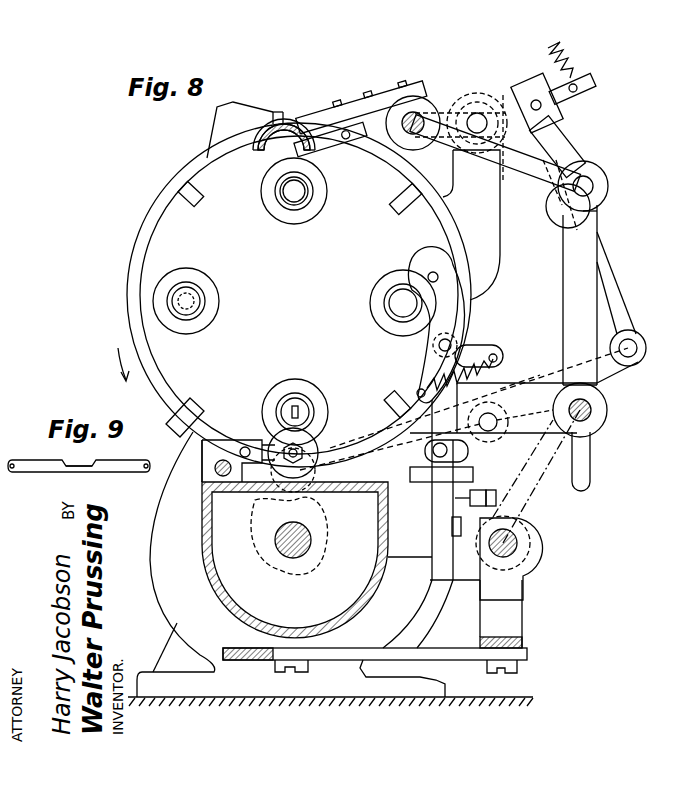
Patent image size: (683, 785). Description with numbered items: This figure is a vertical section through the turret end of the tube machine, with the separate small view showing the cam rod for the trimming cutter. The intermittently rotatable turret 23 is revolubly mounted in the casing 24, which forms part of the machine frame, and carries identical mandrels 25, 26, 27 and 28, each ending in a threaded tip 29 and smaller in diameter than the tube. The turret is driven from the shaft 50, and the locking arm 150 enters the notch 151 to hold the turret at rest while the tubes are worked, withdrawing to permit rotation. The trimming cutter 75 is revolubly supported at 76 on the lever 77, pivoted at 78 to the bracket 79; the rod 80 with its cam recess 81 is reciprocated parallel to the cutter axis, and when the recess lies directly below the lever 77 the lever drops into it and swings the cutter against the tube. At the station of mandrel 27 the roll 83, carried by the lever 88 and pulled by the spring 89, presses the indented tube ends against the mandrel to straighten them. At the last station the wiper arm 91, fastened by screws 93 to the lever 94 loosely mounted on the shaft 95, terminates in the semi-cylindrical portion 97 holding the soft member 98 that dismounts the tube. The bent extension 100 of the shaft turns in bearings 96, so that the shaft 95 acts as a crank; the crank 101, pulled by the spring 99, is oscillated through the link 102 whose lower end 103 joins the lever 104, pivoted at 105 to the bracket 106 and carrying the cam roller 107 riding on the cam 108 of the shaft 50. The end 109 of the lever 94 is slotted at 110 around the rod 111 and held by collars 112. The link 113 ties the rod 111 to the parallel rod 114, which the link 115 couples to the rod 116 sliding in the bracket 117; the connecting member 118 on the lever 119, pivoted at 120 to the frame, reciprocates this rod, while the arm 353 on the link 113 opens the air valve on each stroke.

In FIG. 8, the turret 23 is at (299, 295).
In FIG. 8, the casing 24 is at (130, 262).
In FIG. 8, the mandrel 25 is at (200, 298).
In FIG. 8, the mandrel 26 is at (304, 398).
In FIG. 8, the mandrel 27 is at (386, 311).
In FIG. 8, the mandrel 28 is at (312, 200).
In FIG. 8, the threaded tip 29 is at (204, 303).
In FIG. 8, the shaft 50 is at (276, 542).
In FIG. 8, the cutter 75 is at (318, 446).
In FIG. 8, the cutter support 76 is at (320, 455).
In FIG. 8, the lever 77 is at (220, 447).
In FIG. 8, the pivot 78 is at (248, 446).
In FIG. 8, the bracket 79 is at (282, 450).
In FIG. 8, the rod 80 is at (201, 478).
In FIG. 9, the rod 80 is at (131, 459).
In FIG. 8, the cam recess 81 is at (214, 468).
In FIG. 9, the cam recess 81 is at (86, 458).
In FIG. 8, the roll 83 is at (421, 263).
In FIG. 8, the lever 88 is at (466, 318).
In FIG. 8, the spring 89 is at (465, 367).
In FIG. 8, the wiper arm 91 is at (352, 125).
In FIG. 8, the screws 93 is at (398, 80).
In FIG. 8, the lever 94 is at (518, 170).
In FIG. 8, the shaft 95 is at (425, 111).
In FIG. 8, the bearings 96 is at (498, 273).
In FIG. 8, the semi-cylindrical portion 97 is at (276, 112).
In FIG. 8, the semi-cylindrical member 98 is at (270, 165).
In FIG. 8, the spring 99 is at (571, 50).
In FIG. 8, the shaft extension 100 is at (478, 112).
In FIG. 8, the crank 101 is at (591, 91).
In FIG. 8, the link 102 is at (616, 292).
In FIG. 8, the lower end of link 103 is at (643, 343).
In FIG. 8, the lever 104 is at (554, 376).
In FIG. 8, the pivot 105 is at (498, 420).
In FIG. 8, the bracket 106 is at (518, 386).
In FIG. 8, the cam roller 107 is at (316, 472).
In FIG. 8, the cam 108 is at (252, 520).
In FIG. 8, the end of lever 109 is at (600, 210).
In FIG. 8, the slot 110 is at (556, 212).
In FIG. 8, the rod 111 is at (596, 185).
In FIG. 8, the collars 112 is at (590, 165).
In FIG. 8, the link 113 is at (598, 244).
In FIG. 8, the rod 114 is at (592, 410).
In FIG. 8, the link 115 is at (548, 510).
In FIG. 8, the rod 116 is at (518, 549).
In FIG. 8, the bracket 117 is at (458, 574).
In FIG. 8, the connecting member 118 is at (498, 637).
In FIG. 8, the lever 119 is at (350, 650).
In FIG. 8, the pivot 120 is at (306, 668).
In FIG. 8, the locking arm 150 is at (200, 403).
In FIG. 8, the notch 151 is at (200, 202).
In FIG. 8, the arm 353 is at (591, 472).